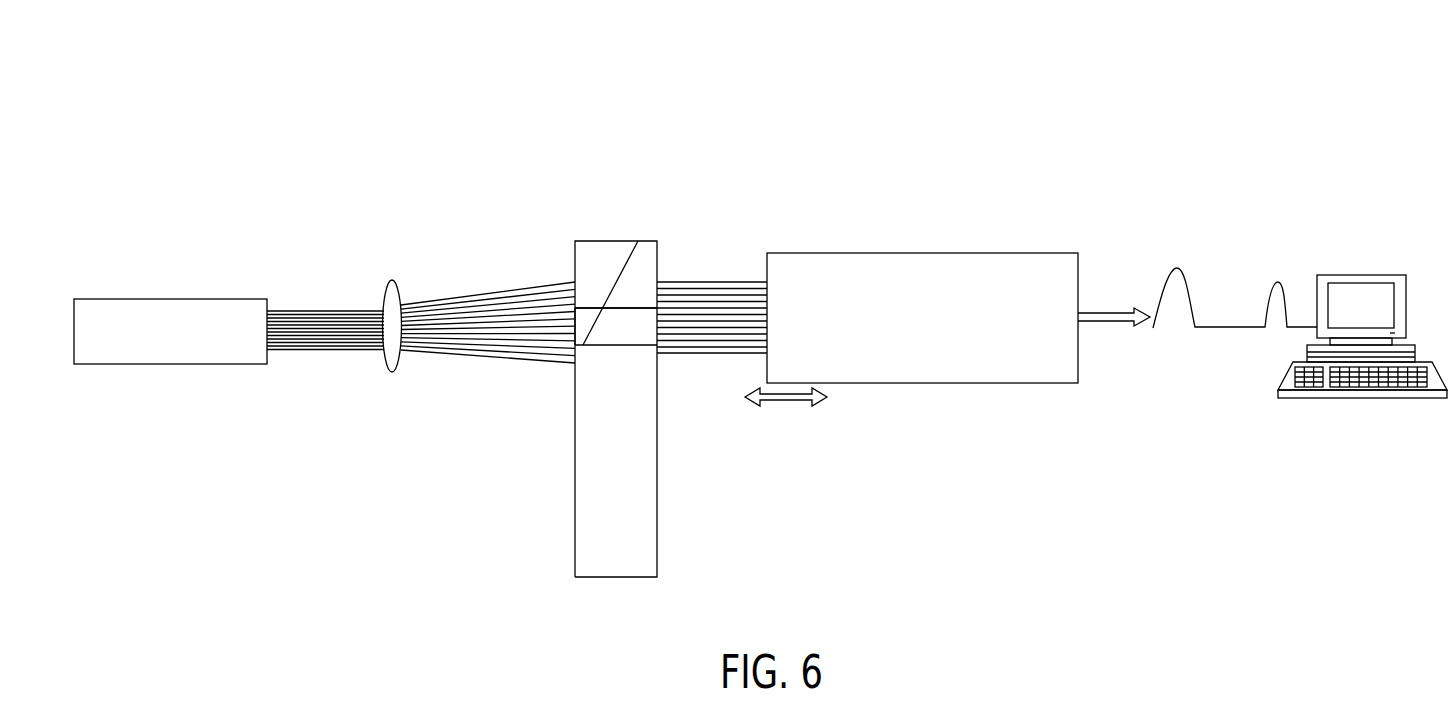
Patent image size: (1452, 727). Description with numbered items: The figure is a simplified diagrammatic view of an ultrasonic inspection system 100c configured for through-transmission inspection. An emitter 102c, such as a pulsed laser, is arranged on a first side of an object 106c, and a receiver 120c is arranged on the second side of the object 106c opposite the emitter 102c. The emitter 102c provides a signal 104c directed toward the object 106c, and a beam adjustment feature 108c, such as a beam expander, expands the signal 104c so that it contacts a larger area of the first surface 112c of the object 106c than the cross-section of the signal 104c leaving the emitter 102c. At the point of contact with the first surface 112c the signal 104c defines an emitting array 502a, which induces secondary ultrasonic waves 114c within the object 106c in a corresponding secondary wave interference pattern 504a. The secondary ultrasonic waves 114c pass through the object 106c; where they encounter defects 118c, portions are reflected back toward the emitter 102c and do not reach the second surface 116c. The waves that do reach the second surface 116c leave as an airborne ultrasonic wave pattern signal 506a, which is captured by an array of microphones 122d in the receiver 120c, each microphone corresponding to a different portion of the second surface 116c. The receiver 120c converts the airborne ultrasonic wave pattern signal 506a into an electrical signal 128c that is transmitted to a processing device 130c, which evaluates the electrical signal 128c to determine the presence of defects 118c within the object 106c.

The ultrasonic inspection system 100c is at (1160, 102).
The emitter 102c is at (229, 322).
The signal 104c is at (478, 317).
The object 106c is at (595, 252).
The beam adjustment feature 108c is at (393, 373).
The first surface 112c is at (575, 463).
The secondary ultrasonic waves 114c is at (588, 308).
The second surface 116c is at (657, 465).
The defects 118c is at (623, 337).
The receiver 120c is at (978, 460).
The array of microphones 122d is at (977, 252).
The electrical signal 128c is at (1183, 270).
The processing device 130c is at (1400, 275).
The emitting array 502a is at (575, 328).
The secondary wave interference pattern 504a is at (651, 308).
The airborne ultrasonic wave pattern signal 506a is at (693, 348).